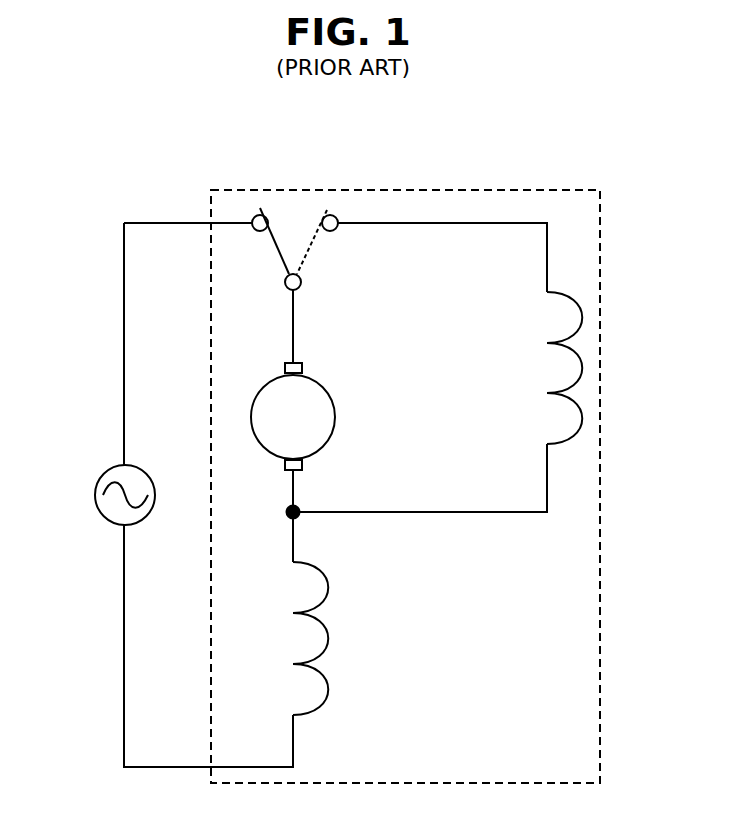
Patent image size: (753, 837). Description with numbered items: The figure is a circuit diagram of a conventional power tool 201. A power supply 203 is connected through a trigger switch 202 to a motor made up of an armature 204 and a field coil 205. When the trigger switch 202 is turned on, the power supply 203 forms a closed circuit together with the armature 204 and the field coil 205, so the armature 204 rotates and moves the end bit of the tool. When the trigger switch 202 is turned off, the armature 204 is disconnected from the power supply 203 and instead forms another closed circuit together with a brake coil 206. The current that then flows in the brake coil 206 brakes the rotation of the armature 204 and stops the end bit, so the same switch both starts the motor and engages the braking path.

The conventional power tool 201 is at (493, 190).
The trigger switch 202 is at (298, 213).
The power supply 203 is at (98, 492).
The armature 204 is at (335, 408).
The field coil 205 is at (333, 637).
The brake coil 206 is at (590, 365).